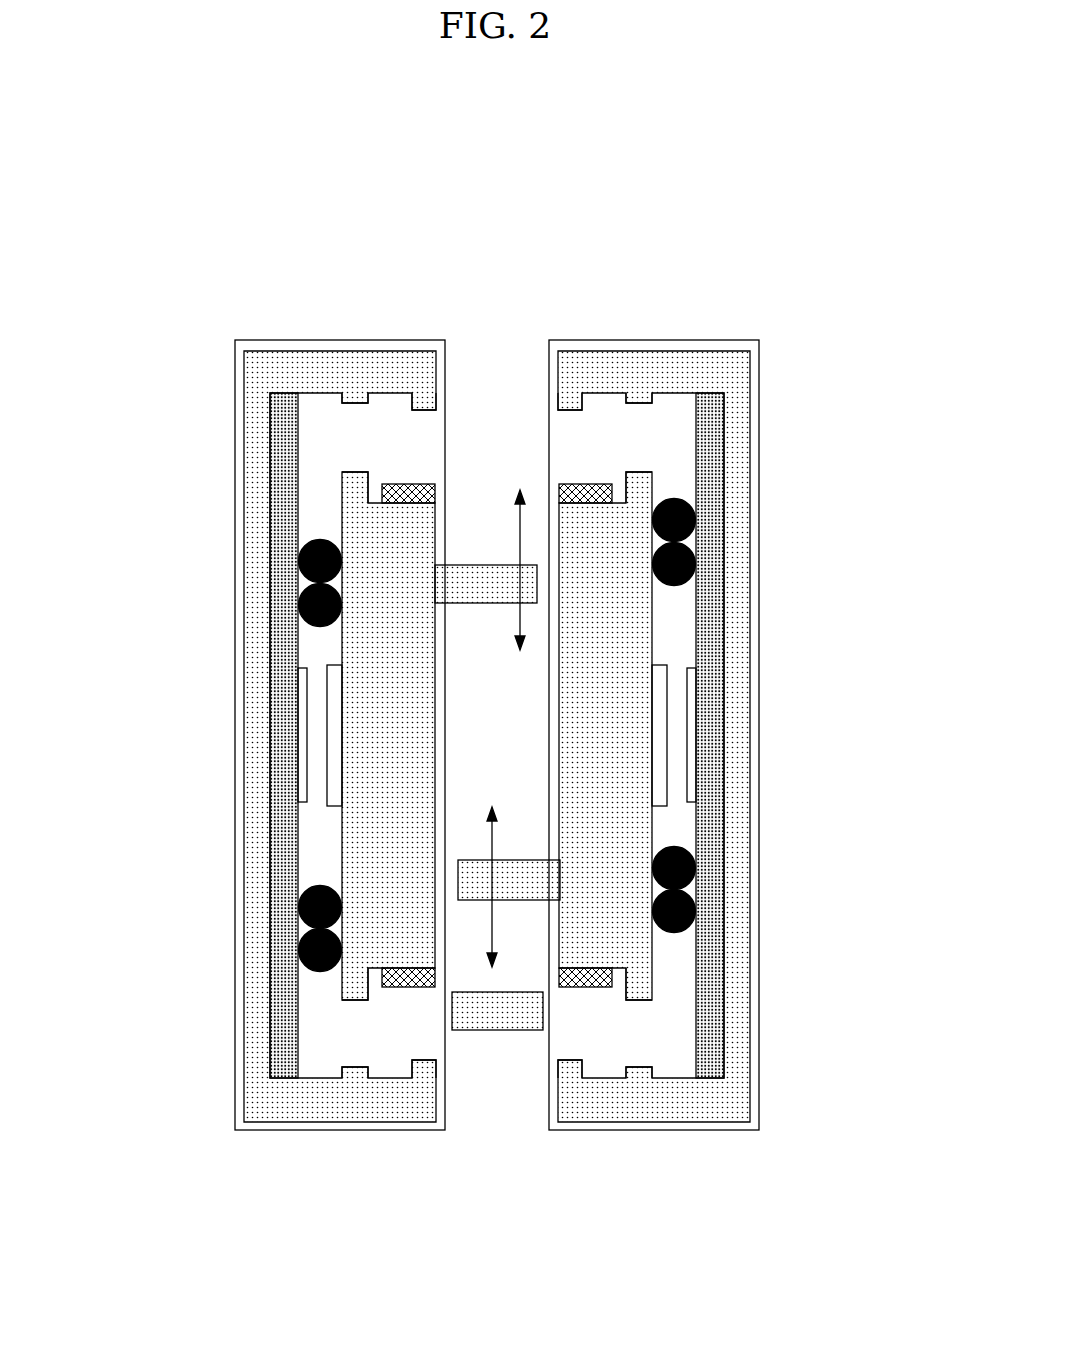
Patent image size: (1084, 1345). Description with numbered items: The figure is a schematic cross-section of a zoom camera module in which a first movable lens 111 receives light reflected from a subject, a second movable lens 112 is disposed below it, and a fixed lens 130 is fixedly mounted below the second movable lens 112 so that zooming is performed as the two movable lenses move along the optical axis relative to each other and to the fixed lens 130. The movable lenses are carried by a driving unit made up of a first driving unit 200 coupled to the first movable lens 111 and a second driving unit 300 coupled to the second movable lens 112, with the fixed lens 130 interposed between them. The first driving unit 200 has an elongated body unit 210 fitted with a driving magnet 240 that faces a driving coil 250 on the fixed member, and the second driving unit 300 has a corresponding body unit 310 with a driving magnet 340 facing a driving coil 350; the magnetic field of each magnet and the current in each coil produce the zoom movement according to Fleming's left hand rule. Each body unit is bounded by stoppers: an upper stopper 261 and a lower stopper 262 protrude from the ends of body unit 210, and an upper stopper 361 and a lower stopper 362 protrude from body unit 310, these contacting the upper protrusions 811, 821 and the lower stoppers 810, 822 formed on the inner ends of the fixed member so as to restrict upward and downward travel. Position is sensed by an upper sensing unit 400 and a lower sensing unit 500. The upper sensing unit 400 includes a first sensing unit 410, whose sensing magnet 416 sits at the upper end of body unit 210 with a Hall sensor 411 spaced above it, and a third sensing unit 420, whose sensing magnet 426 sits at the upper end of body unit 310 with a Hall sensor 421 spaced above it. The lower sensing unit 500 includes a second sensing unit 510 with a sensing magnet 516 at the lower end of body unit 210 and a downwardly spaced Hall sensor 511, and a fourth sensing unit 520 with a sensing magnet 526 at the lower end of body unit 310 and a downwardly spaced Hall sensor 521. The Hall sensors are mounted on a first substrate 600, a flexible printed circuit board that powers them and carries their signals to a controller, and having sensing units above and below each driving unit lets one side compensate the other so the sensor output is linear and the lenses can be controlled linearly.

The first movable lens 111 is at (480, 575).
The second movable lens 112 is at (515, 875).
The fixed lens 130 is at (503, 1020).
The first driving unit 200 is at (253, 736).
The body unit 210 is at (377, 645).
The driving magnet 240 is at (335, 707).
The driving coil 250 is at (232, 735).
The upper stopper 261 is at (348, 488).
The lower stopper 262 is at (355, 990).
The second driving unit 300 is at (743, 736).
The body unit 310 is at (617, 645).
The driving magnet 340 is at (659, 707).
The driving coil 350 is at (764, 735).
The upper stopper 361 is at (646, 488).
The lower stopper 362 is at (639, 990).
The upper sensing unit 400 is at (499, 322).
The first sensing unit 410 is at (351, 350).
The Hall sensor 411 is at (425, 400).
The sensing magnet 416 is at (405, 487).
The third sensing unit 420 is at (649, 350).
The Hall sensor 421 is at (569, 400).
The sensing magnet 426 is at (589, 487).
The lower sensing unit 500 is at (500, 1138).
The second sensing unit 510 is at (364, 1111).
The Hall sensor 511 is at (427, 1068).
The sensing magnet 516 is at (401, 978).
The fourth sensing unit 520 is at (636, 1111).
The Hall sensor 521 is at (567, 1068).
The sensing magnet 526 is at (593, 978).
The first substrate 600 is at (252, 1077).
The first lower guide protrusion 810 is at (353, 1072).
The upper protrusion 811 is at (348, 395).
The upper protrusion 821 is at (646, 395).
The lower stopper 822 is at (641, 1072).